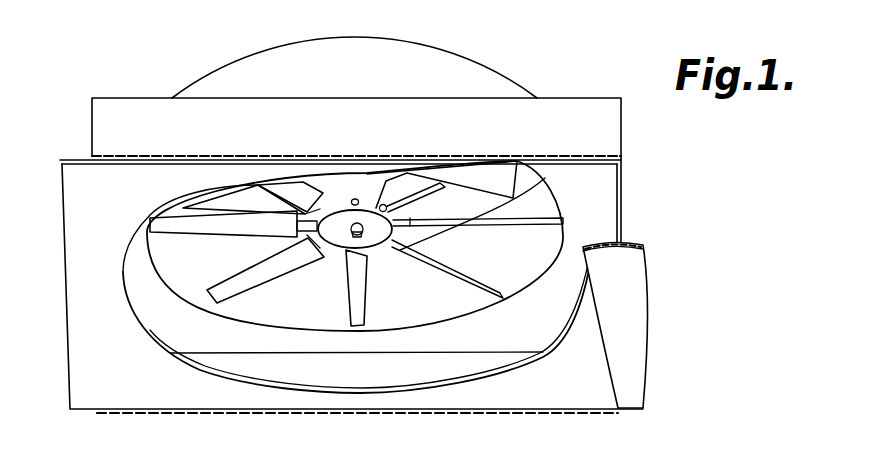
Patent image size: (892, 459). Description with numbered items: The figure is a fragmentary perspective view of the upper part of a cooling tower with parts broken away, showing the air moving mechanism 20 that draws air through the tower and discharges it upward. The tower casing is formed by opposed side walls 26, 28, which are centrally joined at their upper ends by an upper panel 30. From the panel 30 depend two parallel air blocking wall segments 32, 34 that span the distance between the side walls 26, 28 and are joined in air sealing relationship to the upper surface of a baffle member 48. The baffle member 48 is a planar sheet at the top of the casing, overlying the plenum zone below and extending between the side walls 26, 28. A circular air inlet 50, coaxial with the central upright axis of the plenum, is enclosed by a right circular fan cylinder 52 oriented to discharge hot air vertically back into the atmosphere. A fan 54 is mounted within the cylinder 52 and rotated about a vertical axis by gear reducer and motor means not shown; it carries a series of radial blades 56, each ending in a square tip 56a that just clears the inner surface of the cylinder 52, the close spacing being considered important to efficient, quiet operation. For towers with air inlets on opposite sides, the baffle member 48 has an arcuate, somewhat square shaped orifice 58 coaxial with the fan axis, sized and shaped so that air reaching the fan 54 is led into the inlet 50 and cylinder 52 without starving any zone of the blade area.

The air moving mechanism 20 is at (556, 75).
The side wall 26 is at (158, 413).
The side wall 28 is at (155, 141).
The upper panel 30 is at (601, 180).
The wall segment 32 is at (92, 118).
The wall segment 34 is at (622, 212).
The baffle member 48 is at (641, 311).
The circular air inlet 50 is at (482, 306).
The fan cylinder 52 is at (252, 60).
The fan 54 is at (387, 190).
The radial blades 56 is at (362, 297).
The square tip 56a is at (212, 291).
The orifice 58 is at (537, 377).